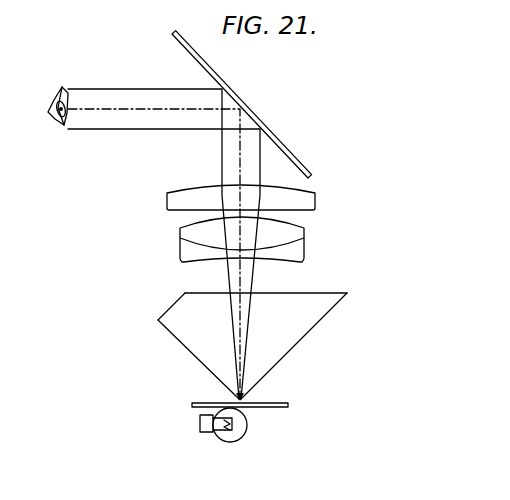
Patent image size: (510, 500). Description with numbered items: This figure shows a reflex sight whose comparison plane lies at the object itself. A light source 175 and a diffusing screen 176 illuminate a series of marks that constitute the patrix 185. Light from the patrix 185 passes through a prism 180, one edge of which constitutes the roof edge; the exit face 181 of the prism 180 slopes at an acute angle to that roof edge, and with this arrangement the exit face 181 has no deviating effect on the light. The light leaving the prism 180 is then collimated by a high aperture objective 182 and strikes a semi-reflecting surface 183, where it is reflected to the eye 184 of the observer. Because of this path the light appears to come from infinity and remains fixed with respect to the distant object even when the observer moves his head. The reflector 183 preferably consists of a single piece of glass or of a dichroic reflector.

The light source 175 is at (238, 424).
The diffusing screen 176 is at (278, 401).
The prism 180 is at (306, 314).
The exit face 181 is at (322, 292).
The high aperture objective 182 is at (319, 192).
The semi-reflecting surface 183 is at (285, 149).
The eye 184 is at (58, 129).
The patrix 185 is at (226, 387).